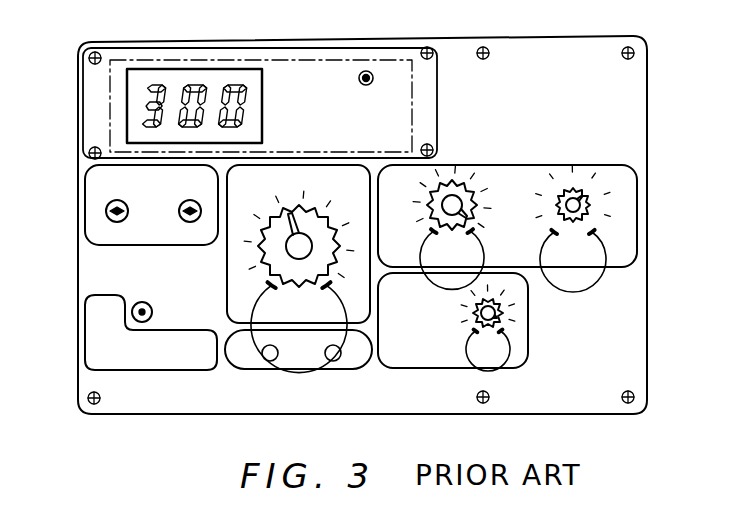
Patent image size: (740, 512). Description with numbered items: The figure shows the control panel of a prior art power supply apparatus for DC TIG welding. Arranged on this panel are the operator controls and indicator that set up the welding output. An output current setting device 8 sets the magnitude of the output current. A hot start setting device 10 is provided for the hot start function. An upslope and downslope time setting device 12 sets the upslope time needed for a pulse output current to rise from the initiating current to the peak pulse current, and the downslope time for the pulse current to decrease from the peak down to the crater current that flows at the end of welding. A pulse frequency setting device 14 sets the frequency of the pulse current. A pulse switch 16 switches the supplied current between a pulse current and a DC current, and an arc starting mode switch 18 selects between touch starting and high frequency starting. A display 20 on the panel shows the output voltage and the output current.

The output current setting device 8 is at (270, 190).
The hot start setting device 10 is at (505, 321).
The upslope and downslope time setting device 12 is at (463, 182).
The pulse frequency setting device 14 is at (567, 182).
The pulse switch 16 is at (96, 184).
The arc starting mode switch 18 is at (184, 342).
The display 20 is at (180, 78).